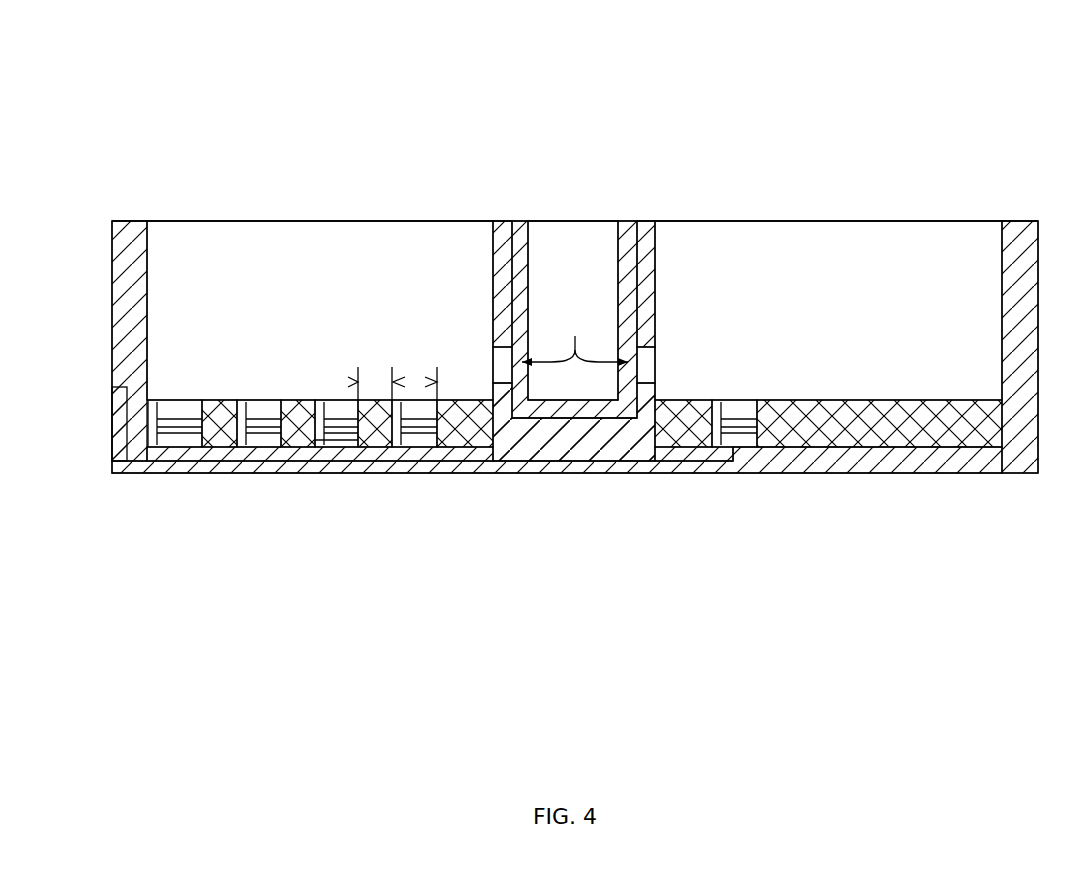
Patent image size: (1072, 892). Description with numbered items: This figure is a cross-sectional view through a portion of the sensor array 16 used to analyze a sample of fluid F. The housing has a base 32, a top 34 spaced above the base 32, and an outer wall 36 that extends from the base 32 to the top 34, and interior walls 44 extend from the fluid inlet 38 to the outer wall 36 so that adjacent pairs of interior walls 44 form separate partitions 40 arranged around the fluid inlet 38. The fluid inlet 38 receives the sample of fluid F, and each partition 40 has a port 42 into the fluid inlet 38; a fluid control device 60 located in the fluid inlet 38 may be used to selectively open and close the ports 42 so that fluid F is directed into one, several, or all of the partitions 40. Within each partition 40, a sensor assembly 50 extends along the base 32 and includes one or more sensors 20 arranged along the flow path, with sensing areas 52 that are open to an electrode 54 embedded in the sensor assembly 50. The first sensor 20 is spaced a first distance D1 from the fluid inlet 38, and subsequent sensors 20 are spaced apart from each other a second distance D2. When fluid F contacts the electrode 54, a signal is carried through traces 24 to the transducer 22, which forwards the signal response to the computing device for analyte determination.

The sensor array 16 is at (160, 103).
The sensors 20 is at (140, 445).
The transducer 22 is at (112, 428).
The traces 24 is at (155, 462).
The base 32 is at (525, 475).
The top 34 is at (128, 220).
The outer wall 36 is at (127, 287).
The fluid inlet 38 is at (553, 221).
The partitions 40 is at (188, 237).
The port 42 is at (575, 336).
The interior walls 44 is at (270, 270).
The sensor assembly 50 is at (245, 355).
The sensing areas 52 is at (335, 400).
The electrode 54 is at (340, 447).
The fluid control device 60 is at (522, 248).
The first distance D1 is at (467, 372).
The second distance D2 is at (377, 372).
The fluid F is at (583, 238).